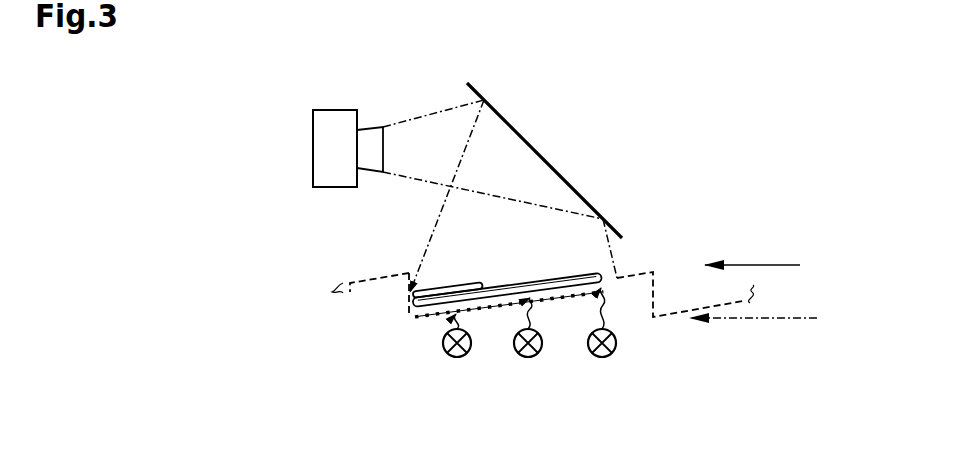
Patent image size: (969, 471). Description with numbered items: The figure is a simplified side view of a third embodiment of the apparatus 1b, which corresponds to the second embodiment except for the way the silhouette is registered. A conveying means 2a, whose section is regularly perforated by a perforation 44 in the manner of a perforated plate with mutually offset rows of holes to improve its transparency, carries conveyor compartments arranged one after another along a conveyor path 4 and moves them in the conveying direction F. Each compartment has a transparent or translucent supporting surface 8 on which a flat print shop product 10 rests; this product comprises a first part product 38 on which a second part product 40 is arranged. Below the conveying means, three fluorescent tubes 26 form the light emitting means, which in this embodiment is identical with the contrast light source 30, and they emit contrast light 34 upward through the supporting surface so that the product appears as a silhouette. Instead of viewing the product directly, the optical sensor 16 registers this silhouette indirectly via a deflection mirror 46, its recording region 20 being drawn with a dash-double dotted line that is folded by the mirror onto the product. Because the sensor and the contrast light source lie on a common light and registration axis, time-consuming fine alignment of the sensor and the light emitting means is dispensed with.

The optical sensor 16 is at (327, 135).
The apparatus 1b is at (297, 217).
The deflection mirror 46 is at (502, 128).
The recording region 20 is at (548, 240).
The print shop product 10 is at (480, 275).
The first part product 38 is at (600, 272).
The second part product 40 is at (450, 290).
The supporting surface 8 is at (637, 272).
The perforation 44 is at (363, 288).
The conveying means 2a is at (339, 294).
The conveying direction F is at (750, 265).
The conveyor path 4 is at (753, 320).
The fluorescent tubes 26 is at (449, 357).
The contrast light source 30 is at (539, 361).
The contrast light 34 is at (453, 321).